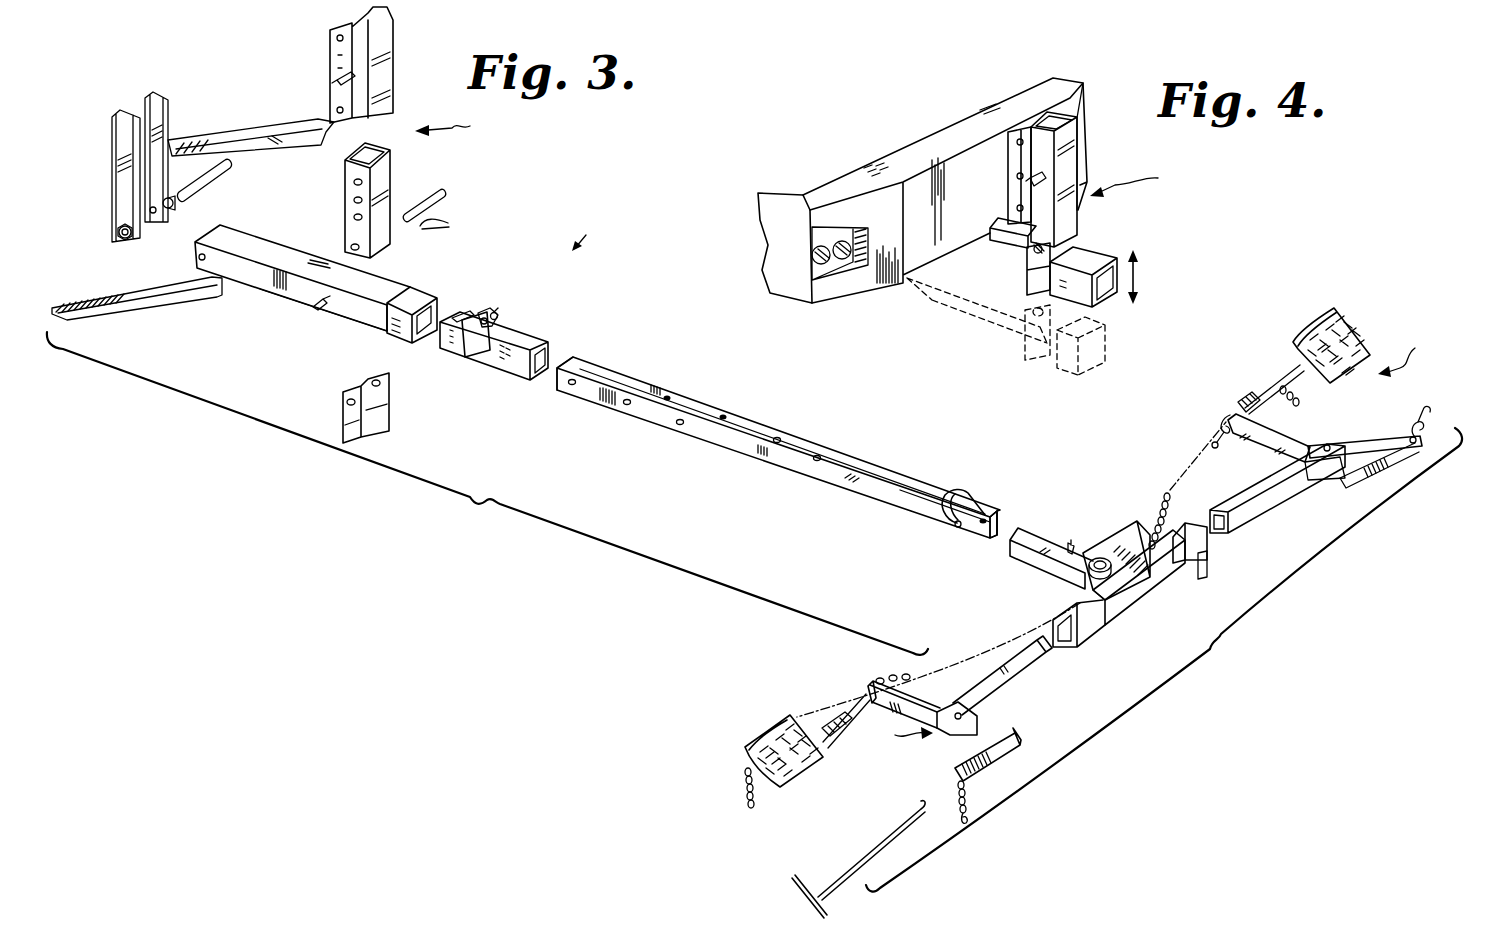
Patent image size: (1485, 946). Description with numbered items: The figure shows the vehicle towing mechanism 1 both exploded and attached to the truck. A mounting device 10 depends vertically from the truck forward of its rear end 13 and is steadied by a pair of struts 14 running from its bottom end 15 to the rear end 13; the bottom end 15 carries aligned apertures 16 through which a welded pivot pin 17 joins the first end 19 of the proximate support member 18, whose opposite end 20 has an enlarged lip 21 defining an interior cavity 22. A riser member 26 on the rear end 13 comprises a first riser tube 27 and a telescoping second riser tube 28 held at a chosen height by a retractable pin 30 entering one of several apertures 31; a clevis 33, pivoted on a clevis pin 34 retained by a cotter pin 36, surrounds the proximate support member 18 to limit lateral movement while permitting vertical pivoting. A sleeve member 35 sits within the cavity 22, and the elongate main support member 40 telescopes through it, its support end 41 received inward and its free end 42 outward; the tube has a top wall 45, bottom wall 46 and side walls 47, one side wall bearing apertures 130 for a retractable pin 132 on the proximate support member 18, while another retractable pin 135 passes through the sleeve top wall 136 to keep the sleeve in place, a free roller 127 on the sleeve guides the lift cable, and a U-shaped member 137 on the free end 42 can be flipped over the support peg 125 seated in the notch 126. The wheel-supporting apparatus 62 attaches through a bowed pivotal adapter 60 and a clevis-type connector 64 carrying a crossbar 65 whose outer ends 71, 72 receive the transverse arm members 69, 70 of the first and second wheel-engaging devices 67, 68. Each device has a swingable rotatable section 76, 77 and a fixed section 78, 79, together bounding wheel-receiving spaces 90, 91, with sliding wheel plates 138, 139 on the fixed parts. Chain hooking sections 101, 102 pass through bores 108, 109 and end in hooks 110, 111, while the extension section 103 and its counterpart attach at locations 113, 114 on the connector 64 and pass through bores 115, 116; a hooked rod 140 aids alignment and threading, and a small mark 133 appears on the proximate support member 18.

In FIG. 3, the vehicle towing mechanism 1 is at (584, 233).
In FIG. 3, the mounting device 10 is at (173, 122).
In FIG. 4, the rear end 13 is at (929, 156).
In FIG. 3, the struts 14 is at (238, 147).
In FIG. 3, the bottom end 15 is at (129, 210).
In FIG. 3, the apertures 16 is at (153, 216).
In FIG. 3, the pivot pin 17 is at (229, 172).
In FIG. 3, the proximate support member 18 is at (305, 299).
In FIG. 4, the proximate support member 18 is at (1007, 233).
In FIG. 3, the first end 19 is at (225, 233).
In FIG. 3, the opposite end 20 is at (387, 334).
In FIG. 4, the opposite end 20 is at (1078, 253).
In FIG. 3, the enlarged lip 21 is at (403, 333).
In FIG. 4, the enlarged lip 21 is at (1083, 306).
In FIG. 3, the interior cavity 22 is at (427, 347).
In FIG. 3, the riser member 26 is at (455, 125).
In FIG. 4, the riser member 26 is at (1138, 181).
In FIG. 3, the first riser tube 27 is at (387, 50).
In FIG. 4, the first riser tube 27 is at (1078, 144).
In FIG. 3, the second riser tube 28 is at (385, 180).
In FIG. 4, the second riser tube 28 is at (1067, 228).
In FIG. 3, the retractable pin 30 is at (331, 80).
In FIG. 4, the retractable pin 30 is at (1028, 182).
In FIG. 3, the apertures 31 is at (358, 217).
In FIG. 3, the clevis 33 is at (347, 410).
In FIG. 4, the clevis 33 is at (1030, 267).
In FIG. 3, the clevis pin 34 is at (443, 193).
In FIG. 3, the sleeve member 35 is at (530, 338).
In FIG. 3, the cotter pin 36 is at (448, 224).
In FIG. 3, the main support member 40 is at (740, 443).
In FIG. 3, the support end 41 is at (560, 387).
In FIG. 3, the free end 42 is at (970, 531).
In FIG. 3, the top wall 45 is at (813, 457).
In FIG. 3, the bottom wall 46 is at (993, 537).
In FIG. 3, the side walls 47 is at (847, 482).
In FIG. 3, the pivotal adapter 60 is at (1028, 537).
In FIG. 3, the wheel-supporting apparatus 62 is at (1138, 577).
In FIG. 3, the clevis-type connector 64 is at (1120, 612).
In FIG. 3, the crossbar 65 is at (1200, 557).
In FIG. 3, the first wheel-engaging device 67 is at (883, 740).
In FIG. 3, the second wheel-engaging device 68 is at (1303, 414).
In FIG. 3, the first transverse arm member 69 is at (1022, 668).
In FIG. 3, the second transverse arm member 70 is at (1267, 497).
In FIG. 3, the outer end 71 is at (1082, 636).
In FIG. 3, the outer end 72 is at (1208, 543).
In FIG. 3, the rotatable section 76 is at (1018, 740).
In FIG. 3, the rotatable section 77 is at (1383, 462).
In FIG. 3, the fixed section 78 is at (873, 683).
In FIG. 3, the fixed section 79 is at (1255, 427).
In FIG. 3, the first wheel-receiving space 90 is at (898, 735).
In FIG. 3, the second wheel-receiving space 91 is at (1409, 356).
In FIG. 3, the hooking section 101 is at (965, 790).
In FIG. 3, the hooking section 102 is at (1413, 428).
In FIG. 3, the extension section 103 is at (745, 774).
In FIG. 3, the bore 108 is at (957, 765).
In FIG. 3, the bore 109 is at (1357, 474).
In FIG. 3, the hook 110 is at (962, 822).
In FIG. 3, the hook 111 is at (1433, 413).
In FIG. 3, the attachment location 113 is at (1088, 567).
In FIG. 3, the attachment location 114 is at (1147, 548).
In FIG. 3, the bore 115 is at (812, 722).
In FIG. 3, the bore 116 is at (1220, 420).
In FIG. 3, the support peg 125 is at (1075, 545).
In FIG. 3, the notch 126 is at (973, 543).
In FIG. 3, the free roller 127 is at (500, 311).
In FIG. 3, the apertures 130 is at (679, 425).
In FIG. 3, the retractable pin 132 is at (322, 312).
In FIG. 3, the mark 133 is at (270, 282).
In FIG. 3, the retractable pin 135 is at (485, 311).
In FIG. 3, the U-shaped member 136 is at (453, 312).
In FIG. 3, the U-shaped member 137 is at (927, 503).
In FIG. 3, the wheel plate 138 is at (770, 736).
In FIG. 3, the wheel plate 139 is at (1337, 323).
In FIG. 3, the hooked rod 140 is at (873, 843).